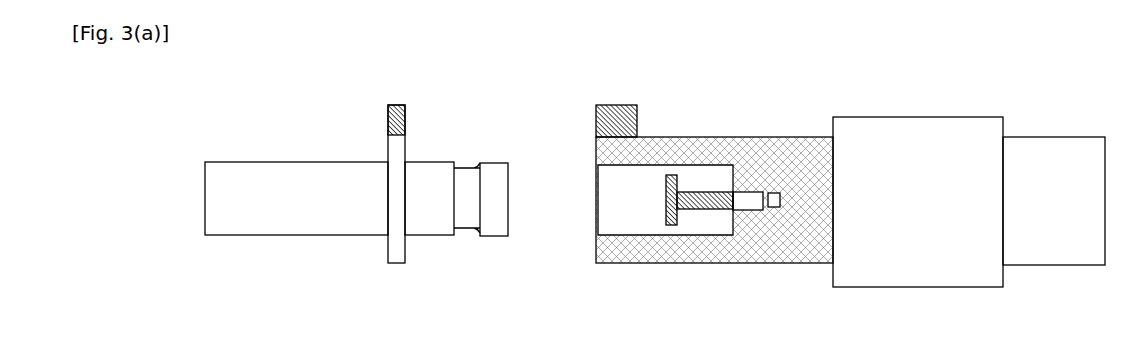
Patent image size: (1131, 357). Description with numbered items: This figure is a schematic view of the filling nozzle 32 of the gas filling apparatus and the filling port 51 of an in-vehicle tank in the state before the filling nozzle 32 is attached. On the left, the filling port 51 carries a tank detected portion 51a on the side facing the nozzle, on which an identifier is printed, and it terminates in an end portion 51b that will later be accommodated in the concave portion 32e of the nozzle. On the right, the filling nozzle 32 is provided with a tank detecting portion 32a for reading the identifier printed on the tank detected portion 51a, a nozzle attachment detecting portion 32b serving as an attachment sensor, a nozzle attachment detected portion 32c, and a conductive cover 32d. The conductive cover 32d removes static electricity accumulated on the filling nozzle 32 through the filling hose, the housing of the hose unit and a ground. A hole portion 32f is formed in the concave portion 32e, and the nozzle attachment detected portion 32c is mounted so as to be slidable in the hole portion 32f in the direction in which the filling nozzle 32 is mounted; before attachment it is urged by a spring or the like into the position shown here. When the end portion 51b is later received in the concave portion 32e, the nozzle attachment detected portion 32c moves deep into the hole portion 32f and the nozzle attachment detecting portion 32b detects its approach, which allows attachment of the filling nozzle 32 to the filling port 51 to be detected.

The filling port 51 is at (255, 162).
The tank detected portion 51a is at (388, 117).
The end portion 51b is at (494, 163).
The filling nozzle 32 is at (1050, 137).
The conductive cover 32d is at (940, 117).
The tank detecting portion 32a is at (616, 105).
The concave portion 32e is at (610, 199).
The nozzle attachment detected portion 32c is at (740, 201).
The hole portion 32f is at (755, 197).
The nozzle attachment detecting portion 32b is at (772, 207).